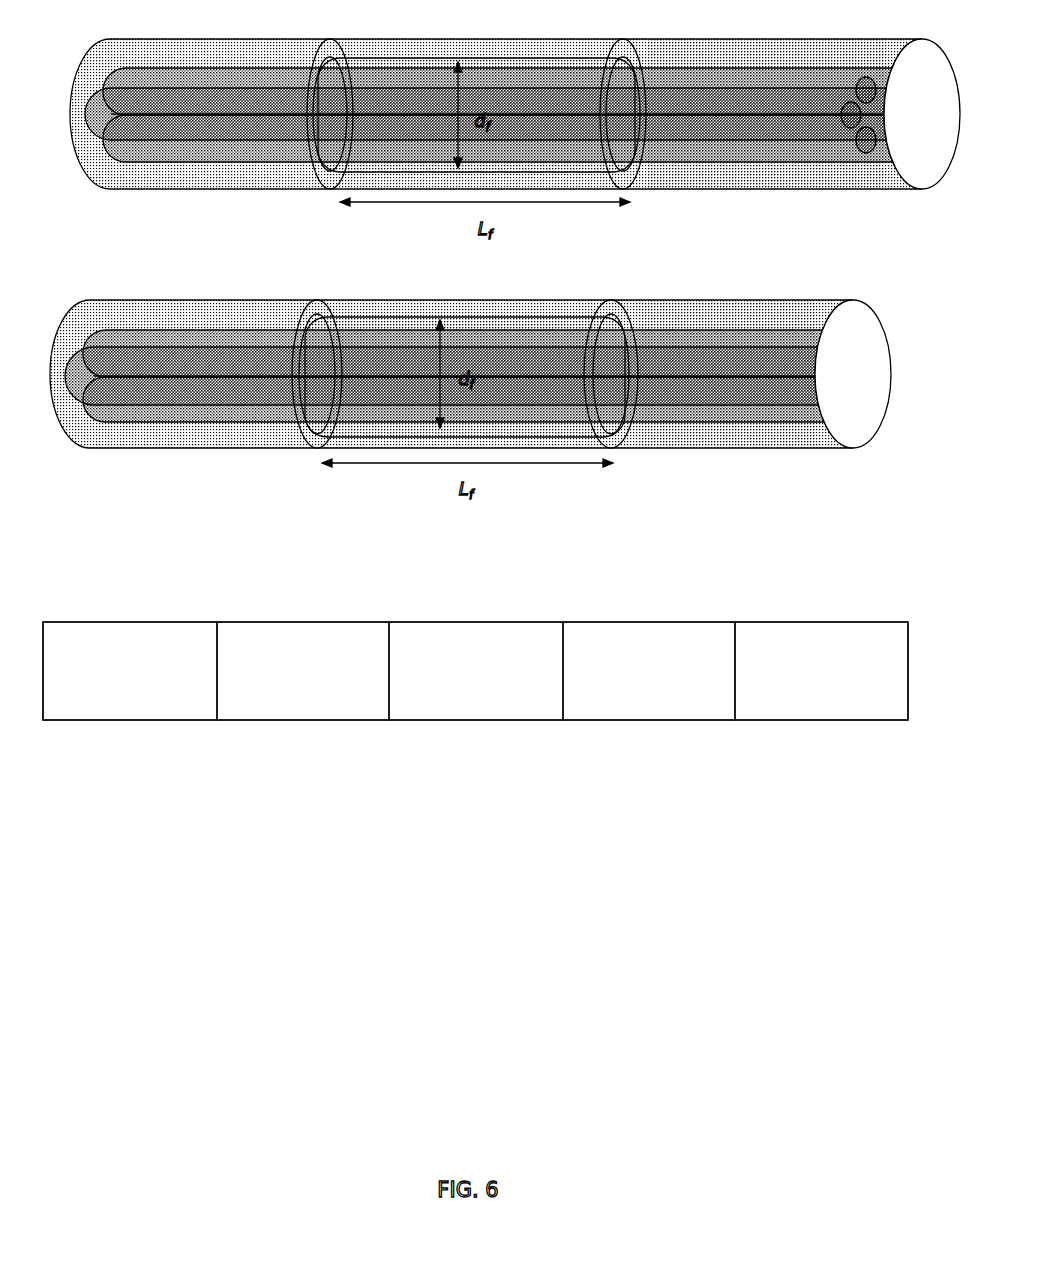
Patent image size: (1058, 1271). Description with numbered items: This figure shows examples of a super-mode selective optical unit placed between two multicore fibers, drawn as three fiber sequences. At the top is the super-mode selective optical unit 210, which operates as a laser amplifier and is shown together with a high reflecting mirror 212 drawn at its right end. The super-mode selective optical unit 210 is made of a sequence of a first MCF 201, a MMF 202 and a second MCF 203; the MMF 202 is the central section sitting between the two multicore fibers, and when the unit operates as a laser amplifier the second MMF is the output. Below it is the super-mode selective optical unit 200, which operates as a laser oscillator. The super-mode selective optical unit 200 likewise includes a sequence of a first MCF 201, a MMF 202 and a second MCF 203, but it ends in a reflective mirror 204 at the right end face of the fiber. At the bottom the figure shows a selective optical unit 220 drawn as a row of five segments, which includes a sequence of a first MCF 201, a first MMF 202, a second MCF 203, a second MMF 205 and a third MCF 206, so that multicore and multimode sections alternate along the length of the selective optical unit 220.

The super-mode selective optical unit 200 is at (425, 523).
The first MCF 201 is at (171, 68).
The MMF 202 is at (524, 124).
The second MCF 203 is at (765, 68).
The reflective mirror 204 is at (834, 385).
The second MMF 205 is at (630, 681).
The third MCF 206 is at (803, 681).
The super-mode selective optical unit 210 is at (506, 269).
The high reflecting mirror 212 is at (903, 124).
The selective optical unit 220 is at (439, 773).